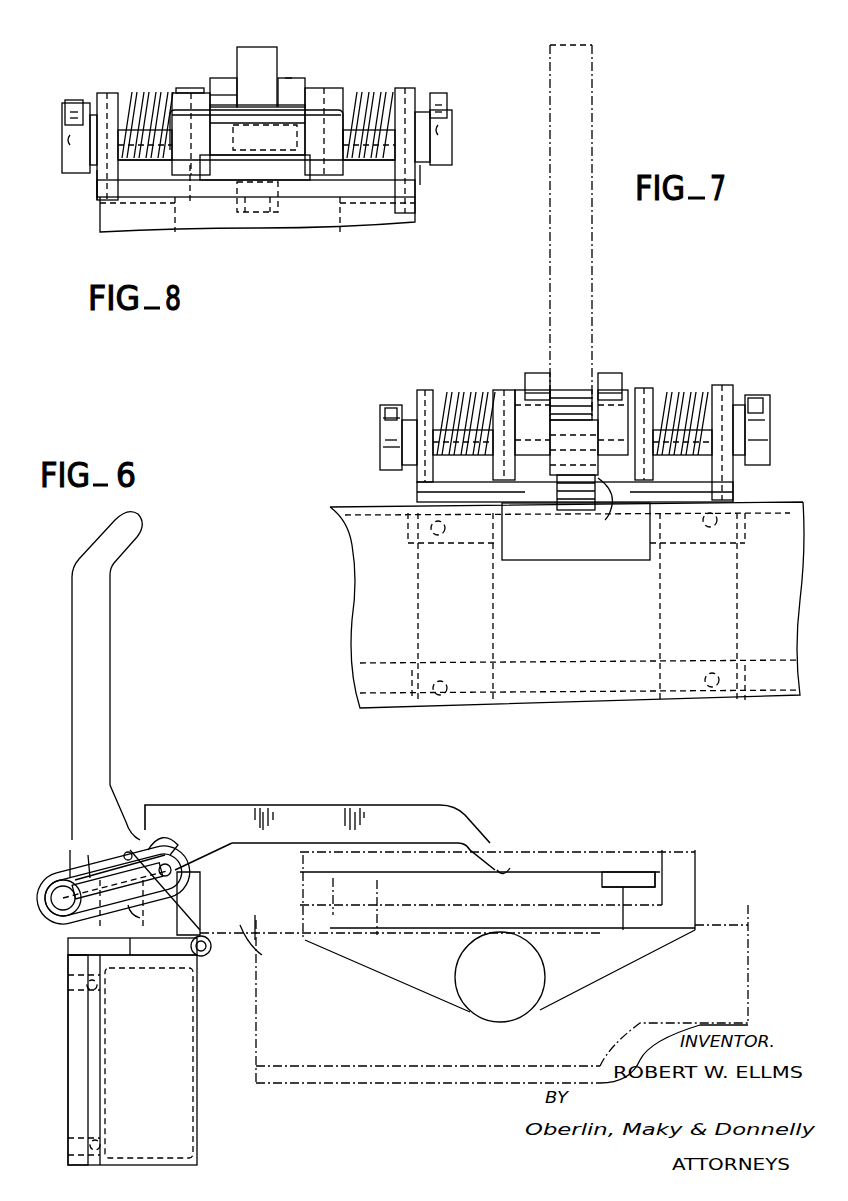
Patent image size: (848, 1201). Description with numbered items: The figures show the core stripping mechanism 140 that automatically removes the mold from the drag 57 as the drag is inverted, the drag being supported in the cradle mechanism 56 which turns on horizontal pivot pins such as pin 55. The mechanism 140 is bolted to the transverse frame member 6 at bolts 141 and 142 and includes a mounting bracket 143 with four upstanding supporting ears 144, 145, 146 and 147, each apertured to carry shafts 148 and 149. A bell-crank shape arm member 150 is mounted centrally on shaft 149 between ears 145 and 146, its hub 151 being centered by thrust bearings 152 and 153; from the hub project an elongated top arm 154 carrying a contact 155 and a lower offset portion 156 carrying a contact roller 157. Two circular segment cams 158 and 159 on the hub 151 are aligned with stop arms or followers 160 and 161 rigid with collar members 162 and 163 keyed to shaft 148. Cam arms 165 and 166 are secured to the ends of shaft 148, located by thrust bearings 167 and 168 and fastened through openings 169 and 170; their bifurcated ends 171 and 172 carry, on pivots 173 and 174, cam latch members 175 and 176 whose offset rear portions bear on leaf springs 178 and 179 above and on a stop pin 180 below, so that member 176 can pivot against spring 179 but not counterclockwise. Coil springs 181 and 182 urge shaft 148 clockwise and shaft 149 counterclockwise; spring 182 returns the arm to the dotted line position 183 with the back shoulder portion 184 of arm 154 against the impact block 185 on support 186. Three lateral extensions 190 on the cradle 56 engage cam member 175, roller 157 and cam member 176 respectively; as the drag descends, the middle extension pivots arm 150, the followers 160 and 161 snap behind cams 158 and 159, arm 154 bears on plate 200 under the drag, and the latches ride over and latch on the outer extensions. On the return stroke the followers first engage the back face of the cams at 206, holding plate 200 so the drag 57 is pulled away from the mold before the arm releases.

In FIG. 6, the transverse frame member 6 is at (160, 1133).
In FIG. 6, the horizontal pivot pin 55 is at (480, 1003).
In FIG. 6, the cradle mechanism 56 is at (686, 888).
In FIG. 6, the drag 57 is at (300, 1050).
In FIG. 6, the core stripping mechanism 140 is at (158, 776).
In FIG. 7, the bolt 141 is at (438, 535).
In FIG. 6, the bolt 141 is at (100, 985).
In FIG. 7, the bolt 142 is at (440, 681).
In FIG. 6, the bolt 142 is at (105, 1142).
In FIG. 7, the mounting bracket 143 is at (425, 490).
In FIG. 6, the mounting bracket 143 is at (77, 1055).
In FIG. 8, the upstanding supporting ear 144 is at (107, 93).
In FIG. 7, the upstanding supporting ear 144 is at (722, 390).
In FIG. 8, the upstanding supporting ear 145 is at (190, 93).
In FIG. 7, the upstanding supporting ear 145 is at (643, 390).
In FIG. 8, the upstanding supporting ear 146 is at (322, 92).
In FIG. 7, the upstanding supporting ear 146 is at (505, 370).
In FIG. 8, the upstanding supporting ear 147 is at (405, 92).
In FIG. 7, the upstanding supporting ear 147 is at (425, 390).
In FIG. 6, the upstanding supporting ear 147 is at (62, 932).
In FIG. 8, the shaft 148 is at (160, 157).
In FIG. 7, the shaft 148 is at (443, 455).
In FIG. 6, the shaft 148 is at (57, 898).
In FIG. 8, the shaft 149 is at (133, 100).
In FIG. 7, the shaft 149 is at (735, 400).
In FIG. 6, the bell-crank shape arm member 150 is at (216, 853).
In FIG. 7, the hub 151 is at (625, 395).
In FIG. 7, the thrust bearing 152 is at (538, 422).
In FIG. 7, the thrust bearing 153 is at (613, 422).
In FIG. 8, the elongated top arm 154 is at (258, 55).
In FIG. 7, the elongated top arm 154 is at (580, 360).
In FIG. 6, the elongated top arm 154 is at (330, 815).
In FIG. 6, the contact 155 is at (505, 868).
In FIG. 7, the lower offset portion 156 is at (612, 510).
In FIG. 6, the lower offset portion 156 is at (140, 947).
In FIG. 8, the contact roller 157 is at (257, 210).
In FIG. 7, the contact roller 157 is at (565, 510).
In FIG. 6, the contact roller 157 is at (205, 957).
In FIG. 8, the circular segment cam 158 is at (288, 78).
In FIG. 7, the circular segment cam 158 is at (537, 373).
In FIG. 6, the circular segment cam 158 is at (165, 845).
In FIG. 8, the circular segment cam 159 is at (222, 76).
In FIG. 7, the circular segment cam 159 is at (607, 380).
In FIG. 8, the stop arm or follower 160 is at (292, 95).
In FIG. 6, the stop arm or follower 160 is at (92, 865).
In FIG. 8, the stop arm or follower 161 is at (212, 93).
In FIG. 8, the collar member 162 is at (280, 205).
In FIG. 8, the collar member 163 is at (192, 170).
In FIG. 8, the cam arm 165 is at (78, 168).
In FIG. 7, the cam arm 165 is at (765, 462).
In FIG. 8, the cam arm 166 is at (442, 160).
In FIG. 7, the cam arm 166 is at (382, 467).
In FIG. 6, the cam arm 166 is at (140, 920).
In FIG. 8, the thrust bearing 167 is at (97, 180).
In FIG. 8, the thrust bearing 168 is at (422, 170).
In FIG. 8, the opening 169 is at (72, 140).
In FIG. 8, the opening 170 is at (442, 128).
In FIG. 7, the bifurcated end 171 is at (765, 396).
In FIG. 7, the bifurcated end 172 is at (387, 408).
In FIG. 6, the bifurcated end 172 is at (139, 905).
In FIG. 7, the pivot 173 is at (765, 420).
In FIG. 7, the pivot 174 is at (383, 418).
In FIG. 6, the pivot 174 is at (172, 868).
In FIG. 7, the cam latch member 175 is at (765, 440).
In FIG. 7, the cam latch member 176 is at (392, 447).
In FIG. 6, the cam latch member 176 is at (185, 912).
In FIG. 8, the leaf spring 178 is at (72, 107).
In FIG. 8, the leaf spring 179 is at (447, 100).
In FIG. 6, the leaf spring 179 is at (75, 865).
In FIG. 6, the stop pin 180 is at (120, 879).
In FIG. 8, the coil spring 181 is at (343, 150).
In FIG. 8, the coil spring 182 is at (363, 92).
In FIG. 7, the coil spring 182 is at (465, 392).
In FIG. 6, the dotted line position 183 is at (112, 680).
In FIG. 6, the angled or back shoulder portion 184 is at (138, 825).
In FIG. 8, the impact block 185 is at (281, 135).
In FIG. 8, the support 186 is at (233, 170).
In FIG. 6, the support 186 is at (132, 947).
In FIG. 6, the lateral extension 190 is at (243, 932).
In FIG. 6, the plate 200 is at (603, 880).
In FIG. 6, the back face engagement 206 is at (128, 852).